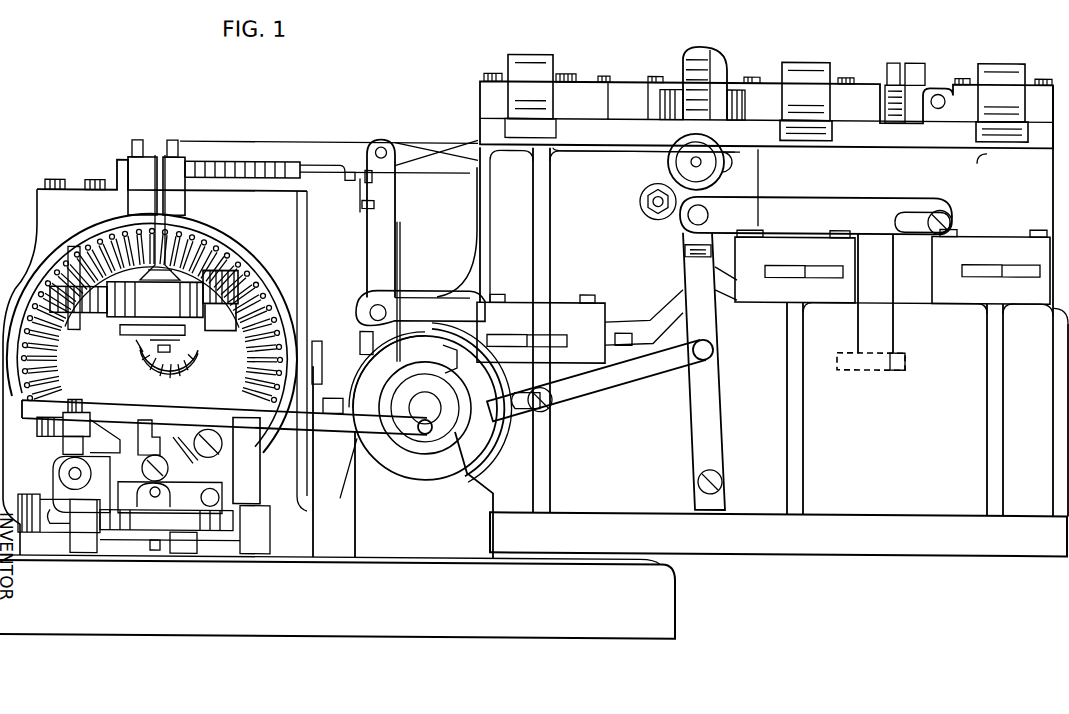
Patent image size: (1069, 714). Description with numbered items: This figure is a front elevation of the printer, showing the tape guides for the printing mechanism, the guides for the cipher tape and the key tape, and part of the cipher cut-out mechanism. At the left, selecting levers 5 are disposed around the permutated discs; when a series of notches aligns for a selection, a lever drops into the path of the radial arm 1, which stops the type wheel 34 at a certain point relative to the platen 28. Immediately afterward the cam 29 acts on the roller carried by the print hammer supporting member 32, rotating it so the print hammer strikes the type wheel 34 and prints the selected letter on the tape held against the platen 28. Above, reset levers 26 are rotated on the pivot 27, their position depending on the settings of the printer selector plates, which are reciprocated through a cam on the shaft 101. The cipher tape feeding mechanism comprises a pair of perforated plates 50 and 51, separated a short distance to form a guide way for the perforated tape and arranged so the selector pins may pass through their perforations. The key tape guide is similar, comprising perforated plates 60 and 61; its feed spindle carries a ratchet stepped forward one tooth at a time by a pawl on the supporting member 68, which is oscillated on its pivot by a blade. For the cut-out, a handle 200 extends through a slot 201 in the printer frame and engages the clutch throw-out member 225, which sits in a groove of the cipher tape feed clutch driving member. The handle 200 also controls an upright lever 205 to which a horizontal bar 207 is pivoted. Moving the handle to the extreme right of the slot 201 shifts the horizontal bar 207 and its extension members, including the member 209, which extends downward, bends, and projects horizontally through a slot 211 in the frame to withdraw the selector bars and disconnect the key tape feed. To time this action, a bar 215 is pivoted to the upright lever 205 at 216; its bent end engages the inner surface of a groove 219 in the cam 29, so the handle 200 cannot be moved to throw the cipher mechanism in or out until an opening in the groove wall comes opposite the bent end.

The radial arm 1 is at (150, 240).
The selecting levers 5 is at (205, 245).
The reset levers 26 is at (285, 149).
The pivot 27 is at (381, 148).
The platen 28 is at (118, 323).
The cam 29 is at (345, 364).
The print hammer supporting member 32 is at (250, 465).
The type wheel 34 is at (195, 353).
The perforated plate 50 is at (815, 58).
The perforated plate 51 is at (820, 131).
The perforated plate 60 is at (1011, 58).
The perforated plate 61 is at (1015, 131).
The supporting member 68 is at (928, 60).
The shaft 101 is at (440, 408).
The handle 200 is at (672, 159).
The slot 201 is at (738, 159).
The upright lever 205 is at (718, 318).
The horizontal bar 207 is at (800, 198).
The member 209 is at (885, 325).
The slot 211 is at (835, 360).
The bar 215 is at (622, 381).
The pivot 216 is at (713, 346).
The groove 219 is at (485, 443).
The clutch throw-out member 225 is at (712, 46).